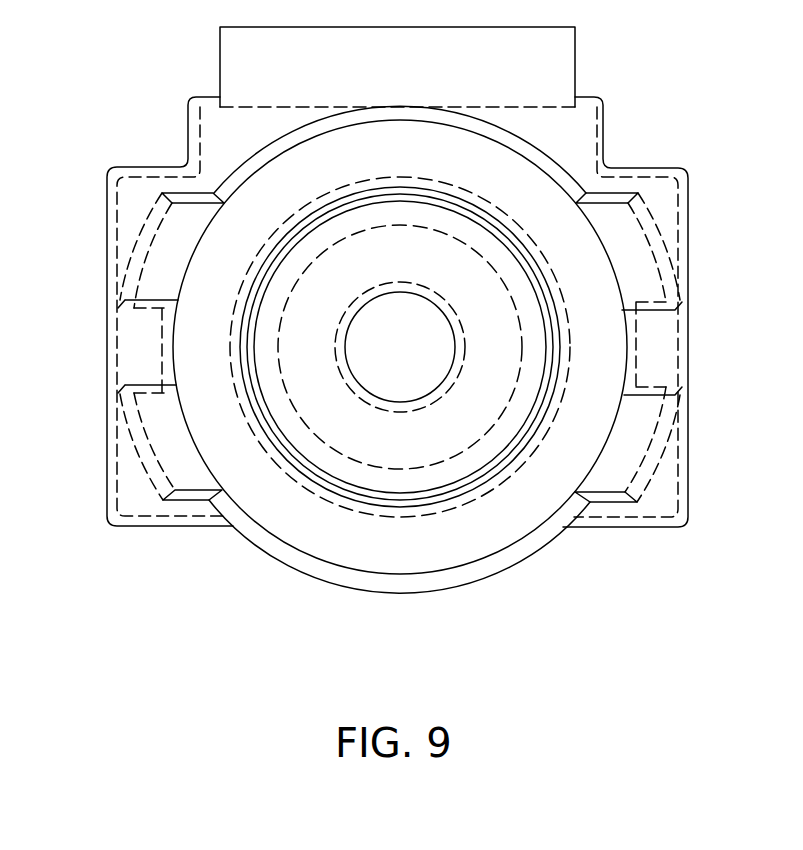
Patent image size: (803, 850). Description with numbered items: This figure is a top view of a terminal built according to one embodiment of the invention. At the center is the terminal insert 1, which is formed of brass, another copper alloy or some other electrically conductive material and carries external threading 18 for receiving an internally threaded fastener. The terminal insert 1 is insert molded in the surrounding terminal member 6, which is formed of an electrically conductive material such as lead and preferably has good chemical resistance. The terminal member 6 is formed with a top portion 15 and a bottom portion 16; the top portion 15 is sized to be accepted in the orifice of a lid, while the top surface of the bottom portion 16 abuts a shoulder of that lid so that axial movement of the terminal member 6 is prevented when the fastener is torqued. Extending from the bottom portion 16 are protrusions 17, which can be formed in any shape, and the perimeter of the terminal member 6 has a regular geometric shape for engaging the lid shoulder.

The terminal insert 1 is at (495, 350).
The terminal member 6 is at (435, 593).
The top portion 15 is at (335, 498).
The bottom portion 16 is at (575, 128).
The protrusions 17 is at (177, 243).
The external threading 18 is at (480, 463).